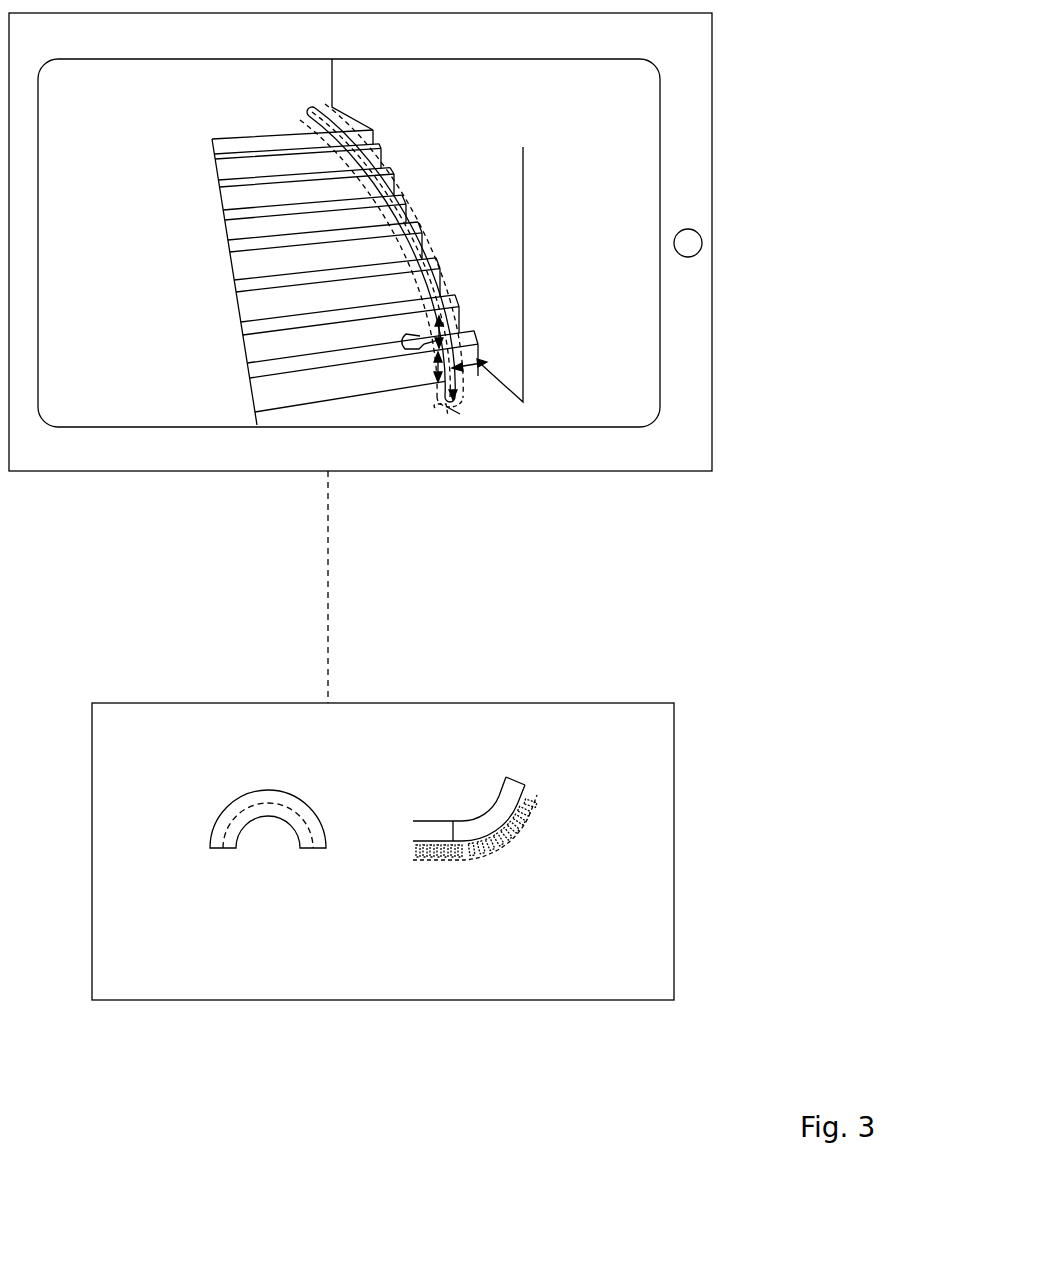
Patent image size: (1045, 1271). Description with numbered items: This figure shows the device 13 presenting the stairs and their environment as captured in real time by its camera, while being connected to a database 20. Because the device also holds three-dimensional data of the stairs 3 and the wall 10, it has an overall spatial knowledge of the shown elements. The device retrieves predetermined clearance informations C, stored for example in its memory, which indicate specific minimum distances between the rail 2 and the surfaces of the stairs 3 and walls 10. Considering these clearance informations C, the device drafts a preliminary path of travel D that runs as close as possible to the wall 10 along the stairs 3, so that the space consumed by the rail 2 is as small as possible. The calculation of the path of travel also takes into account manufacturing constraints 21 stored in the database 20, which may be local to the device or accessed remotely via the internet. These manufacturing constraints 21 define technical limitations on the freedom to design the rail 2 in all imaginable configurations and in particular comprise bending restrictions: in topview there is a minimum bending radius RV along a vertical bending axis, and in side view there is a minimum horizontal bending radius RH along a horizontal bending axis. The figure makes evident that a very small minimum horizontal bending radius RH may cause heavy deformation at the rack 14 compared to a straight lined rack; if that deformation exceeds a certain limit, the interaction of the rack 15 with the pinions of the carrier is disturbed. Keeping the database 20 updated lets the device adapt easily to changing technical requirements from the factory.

The device 13 is at (712, 69).
The stairs 3 is at (230, 238).
The rail 2 is at (427, 234).
The wall 10 is at (502, 248).
The preliminary path of travel D is at (443, 279).
The clearance informations C is at (480, 372).
The database 20 is at (675, 743).
The manufacturing constraints 21 is at (181, 765).
The rack 15 is at (303, 797).
The rack 14 is at (223, 838).
The minimum bending radius along a vertical bending axis RV is at (246, 818).
The minimum horizontal bending radius RH is at (464, 809).